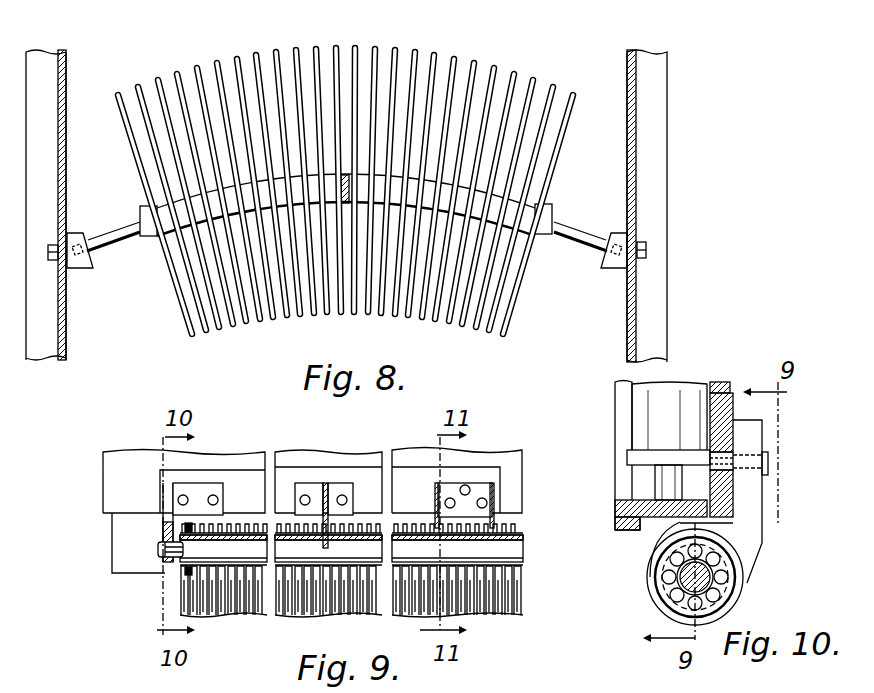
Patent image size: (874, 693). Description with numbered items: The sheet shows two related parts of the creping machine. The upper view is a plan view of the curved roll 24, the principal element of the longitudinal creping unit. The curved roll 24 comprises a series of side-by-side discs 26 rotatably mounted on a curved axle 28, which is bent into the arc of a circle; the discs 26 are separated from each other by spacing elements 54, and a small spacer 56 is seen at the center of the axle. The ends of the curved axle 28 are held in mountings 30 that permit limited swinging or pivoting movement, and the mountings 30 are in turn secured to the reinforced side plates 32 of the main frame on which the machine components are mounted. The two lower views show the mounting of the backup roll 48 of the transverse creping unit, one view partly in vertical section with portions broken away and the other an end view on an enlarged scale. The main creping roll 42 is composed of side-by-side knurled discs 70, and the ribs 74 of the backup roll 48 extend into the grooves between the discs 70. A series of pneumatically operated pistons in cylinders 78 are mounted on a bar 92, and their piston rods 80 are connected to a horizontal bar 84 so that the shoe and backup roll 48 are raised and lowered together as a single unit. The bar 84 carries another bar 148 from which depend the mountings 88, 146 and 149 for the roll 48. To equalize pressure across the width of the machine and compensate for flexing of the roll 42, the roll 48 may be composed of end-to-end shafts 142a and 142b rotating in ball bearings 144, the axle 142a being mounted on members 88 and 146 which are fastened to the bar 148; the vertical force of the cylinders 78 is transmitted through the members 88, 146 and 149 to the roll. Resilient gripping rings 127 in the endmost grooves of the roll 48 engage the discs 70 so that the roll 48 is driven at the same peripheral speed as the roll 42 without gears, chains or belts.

In FIG. 8, the curved roll 24 is at (356, 178).
In FIG. 8, the discs 26 is at (413, 62).
In FIG. 8, the curved axle 28 is at (573, 226).
In FIG. 8, the mountings 30 is at (93, 268).
In FIG. 8, the side plates 32 is at (68, 178).
In FIG. 8, the spacing elements 54 is at (547, 207).
In FIG. 8, the spacer block 56 is at (344, 60).
In FIG. 9, the creping roll 42 is at (377, 613).
In FIG. 9, the backup roll 48 is at (525, 562).
In FIG. 10, the backup roll 48 is at (750, 581).
In FIG. 9, the knurled discs 70 is at (500, 617).
In FIG. 9, the ribs 74 is at (518, 533).
In FIG. 10, the cylinders 78 is at (677, 403).
In FIG. 10, the piston rods 80 is at (665, 472).
In FIG. 10, the horizontal bar 84 is at (645, 505).
In FIG. 9, the mounting member 88 is at (163, 522).
In FIG. 10, the mounting member 88 is at (752, 508).
In FIG. 9, the bar 92 is at (485, 453).
In FIG. 10, the bar 92 is at (720, 380).
In FIG. 9, the resilient gripping rings 127 is at (192, 567).
In FIG. 9, the shaft 142a is at (518, 552).
In FIG. 9, the shaft 142b is at (238, 545).
In FIG. 10, the shaft 142b is at (687, 568).
In FIG. 9, the ball bearings 144 is at (162, 557).
In FIG. 10, the ball bearings 144 is at (662, 610).
In FIG. 9, the mounting member 146 is at (327, 545).
In FIG. 9, the bar 148 is at (405, 490).
In FIG. 10, the bar 148 is at (733, 447).
In FIG. 9, the mounting member 149 is at (495, 528).